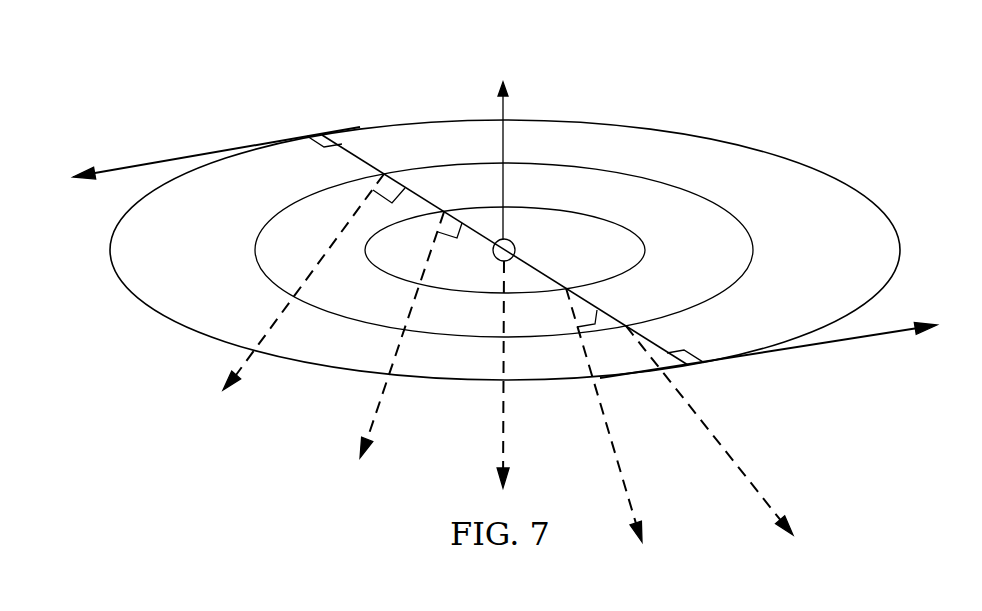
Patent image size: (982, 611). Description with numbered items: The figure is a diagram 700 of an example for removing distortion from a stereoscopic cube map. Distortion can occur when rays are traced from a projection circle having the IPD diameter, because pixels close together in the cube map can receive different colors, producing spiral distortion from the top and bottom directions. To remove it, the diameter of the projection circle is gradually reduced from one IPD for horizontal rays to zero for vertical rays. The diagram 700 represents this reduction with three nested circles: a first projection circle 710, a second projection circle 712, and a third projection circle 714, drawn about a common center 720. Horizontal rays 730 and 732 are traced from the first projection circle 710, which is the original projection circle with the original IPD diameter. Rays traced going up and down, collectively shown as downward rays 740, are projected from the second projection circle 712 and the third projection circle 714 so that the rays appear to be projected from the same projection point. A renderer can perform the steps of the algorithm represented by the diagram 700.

The diagram 700 is at (471, 207).
The first projection circle 710 is at (110, 250).
The second projection circle 712 is at (255, 250).
The third projection circle 714 is at (645, 250).
The center point 720 is at (515, 247).
The horizontal ray 730 is at (167, 160).
The horizontal ray 732 is at (840, 342).
The rays 740 is at (767, 435).